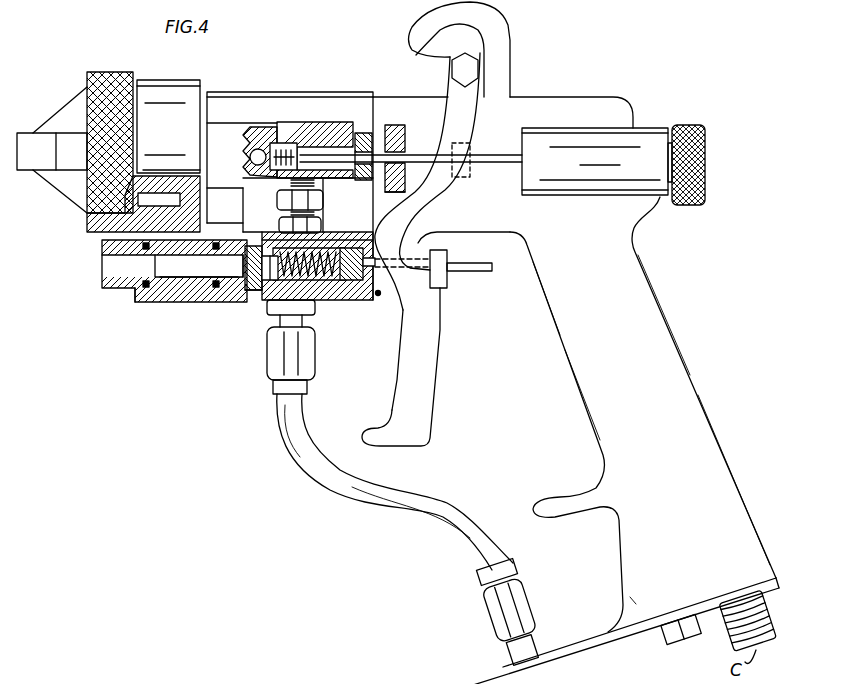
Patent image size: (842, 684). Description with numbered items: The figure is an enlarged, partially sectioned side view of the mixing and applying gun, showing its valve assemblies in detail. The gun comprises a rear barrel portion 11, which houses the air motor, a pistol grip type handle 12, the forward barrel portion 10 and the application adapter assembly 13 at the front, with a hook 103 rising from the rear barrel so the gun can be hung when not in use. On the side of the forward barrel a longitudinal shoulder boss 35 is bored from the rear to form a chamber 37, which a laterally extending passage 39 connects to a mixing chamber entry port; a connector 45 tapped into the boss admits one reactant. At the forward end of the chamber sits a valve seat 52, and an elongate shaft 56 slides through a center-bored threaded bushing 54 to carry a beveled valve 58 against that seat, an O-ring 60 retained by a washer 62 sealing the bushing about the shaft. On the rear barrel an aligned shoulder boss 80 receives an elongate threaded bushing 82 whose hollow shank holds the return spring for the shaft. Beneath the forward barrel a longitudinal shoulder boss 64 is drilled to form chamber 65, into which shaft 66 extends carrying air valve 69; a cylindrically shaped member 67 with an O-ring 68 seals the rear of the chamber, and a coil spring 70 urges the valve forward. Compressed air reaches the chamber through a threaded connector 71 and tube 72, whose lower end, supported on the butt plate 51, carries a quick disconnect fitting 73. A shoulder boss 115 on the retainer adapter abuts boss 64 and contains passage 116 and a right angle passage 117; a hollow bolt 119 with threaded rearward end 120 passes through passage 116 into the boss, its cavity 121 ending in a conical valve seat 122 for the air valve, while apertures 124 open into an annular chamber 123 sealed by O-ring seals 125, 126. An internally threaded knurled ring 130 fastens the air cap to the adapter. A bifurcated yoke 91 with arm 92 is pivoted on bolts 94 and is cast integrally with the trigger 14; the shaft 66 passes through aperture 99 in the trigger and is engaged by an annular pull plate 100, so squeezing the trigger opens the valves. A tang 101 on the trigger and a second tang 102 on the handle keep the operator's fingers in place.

The forward barrel portion 10 is at (289, 88).
The rear barrel portion 11 is at (580, 90).
The pistol grip type handle 12 is at (655, 342).
The application adapter assembly 13 is at (166, 78).
The trigger 14 is at (420, 380).
The longitudinal shoulder boss 35 is at (213, 133).
The chamber 37 is at (333, 170).
The laterally extending passage 39 is at (250, 157).
The connector 45 is at (277, 197).
The butt plate 51 is at (593, 620).
The valve seat 52 is at (276, 128).
The threaded bushing 54 is at (395, 126).
The elongate shaft 56 is at (420, 155).
The valve 58 is at (288, 143).
The O-ring 60 is at (398, 170).
The washer 62 is at (360, 133).
The longitudinal shoulder boss 64 is at (348, 300).
The chamber 65 is at (331, 240).
The shaft 66 is at (474, 271).
The cylindrically shaped member 67 is at (358, 275).
The O-ring 68 is at (388, 294).
The air valve 69 is at (262, 256).
The coil spring 70 is at (341, 282).
The threaded connector 71 is at (278, 314).
The tube 72 is at (323, 475).
The quick disconnect fitting 73 is at (679, 637).
The longitudinal shoulder boss 80 is at (648, 135).
The elongate threaded bushing 82 is at (703, 127).
The bifurcated yoke 91 is at (437, 198).
The arm 92 is at (458, 117).
The bolt 94 is at (463, 72).
The aperture 99 is at (412, 263).
The annular pull plate 100 is at (440, 277).
The tang 101 is at (368, 428).
The second tang 102 is at (558, 497).
The hook 103 is at (435, 15).
The shoulder boss 115 is at (142, 301).
The passage 116 is at (208, 289).
The right angle passage 117 is at (180, 223).
The hollow bolt 119 is at (107, 270).
The rearward end 120 is at (258, 291).
The cavity 121 is at (187, 275).
The conical valve seat 122 is at (249, 276).
The annular chamber 123 is at (167, 289).
The apertures 124 is at (187, 282).
The O-ring seal 125 is at (107, 247).
The O-ring seal 126 is at (225, 241).
The internally threaded knurled ring 130 is at (112, 71).